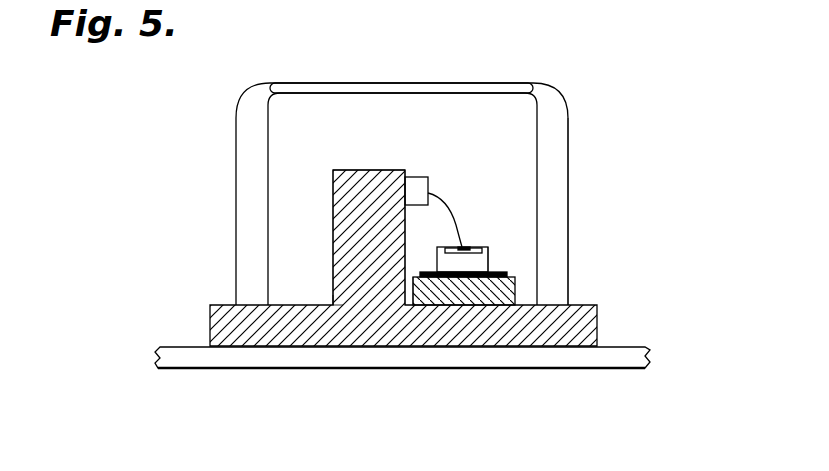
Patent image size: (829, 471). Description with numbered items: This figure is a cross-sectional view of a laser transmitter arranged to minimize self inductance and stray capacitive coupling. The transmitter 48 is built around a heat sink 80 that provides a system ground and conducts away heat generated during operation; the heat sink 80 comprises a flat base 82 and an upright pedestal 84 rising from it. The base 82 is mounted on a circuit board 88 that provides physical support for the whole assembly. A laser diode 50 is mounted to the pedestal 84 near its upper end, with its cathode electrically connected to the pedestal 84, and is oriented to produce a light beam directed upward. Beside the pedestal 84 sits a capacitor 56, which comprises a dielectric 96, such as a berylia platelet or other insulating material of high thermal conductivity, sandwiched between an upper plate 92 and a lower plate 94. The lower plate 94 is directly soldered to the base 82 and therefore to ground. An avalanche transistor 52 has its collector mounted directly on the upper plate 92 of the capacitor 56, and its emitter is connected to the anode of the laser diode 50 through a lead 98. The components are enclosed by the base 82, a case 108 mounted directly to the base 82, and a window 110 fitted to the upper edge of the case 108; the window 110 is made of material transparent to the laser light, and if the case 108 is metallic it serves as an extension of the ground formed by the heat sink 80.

The sensor assembly 48 is at (228, 153).
The window 110 is at (443, 88).
The case 108 is at (557, 140).
The base 82 is at (215, 320).
The pedestal 84 is at (333, 198).
The heat sink 80 is at (324, 302).
The laser diode 50 is at (414, 186).
The lead 98 is at (452, 212).
The avalanche transistor 52 is at (437, 262).
The upper plate 92 is at (508, 272).
The capacitor 56 is at (519, 282).
The dielectric 96 is at (517, 293).
The lower plate 94 is at (490, 306).
The circuit board 88 is at (633, 355).